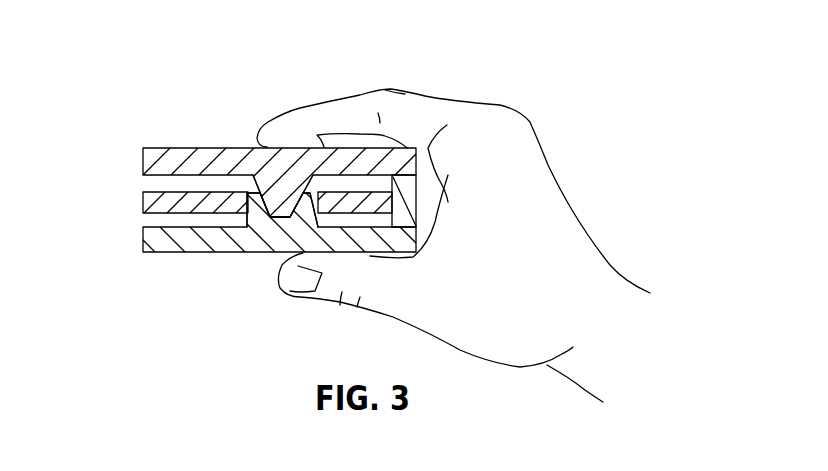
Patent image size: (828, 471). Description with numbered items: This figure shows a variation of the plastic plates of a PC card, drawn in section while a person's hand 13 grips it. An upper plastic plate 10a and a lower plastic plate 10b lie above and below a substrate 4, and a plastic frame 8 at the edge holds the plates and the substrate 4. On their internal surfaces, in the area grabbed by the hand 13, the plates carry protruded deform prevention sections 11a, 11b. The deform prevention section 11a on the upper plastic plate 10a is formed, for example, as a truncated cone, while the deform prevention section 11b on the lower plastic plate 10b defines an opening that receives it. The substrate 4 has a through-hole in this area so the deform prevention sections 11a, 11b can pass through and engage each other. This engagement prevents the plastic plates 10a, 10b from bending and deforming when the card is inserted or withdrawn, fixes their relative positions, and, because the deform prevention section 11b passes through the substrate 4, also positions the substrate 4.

The substrate 4 is at (143, 202).
The plastic frame 8 is at (388, 201).
The upper plastic plate 10a is at (169, 147).
The lower plastic plate 10b is at (182, 243).
The deform prevention section 11a is at (277, 192).
The deform prevention section 11b is at (286, 232).
The hand 13 is at (547, 158).